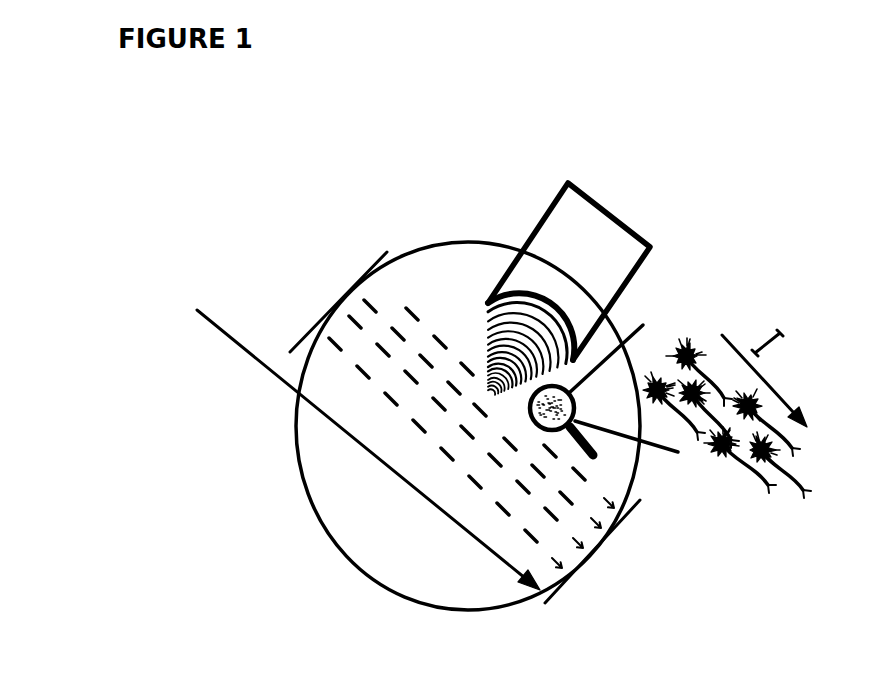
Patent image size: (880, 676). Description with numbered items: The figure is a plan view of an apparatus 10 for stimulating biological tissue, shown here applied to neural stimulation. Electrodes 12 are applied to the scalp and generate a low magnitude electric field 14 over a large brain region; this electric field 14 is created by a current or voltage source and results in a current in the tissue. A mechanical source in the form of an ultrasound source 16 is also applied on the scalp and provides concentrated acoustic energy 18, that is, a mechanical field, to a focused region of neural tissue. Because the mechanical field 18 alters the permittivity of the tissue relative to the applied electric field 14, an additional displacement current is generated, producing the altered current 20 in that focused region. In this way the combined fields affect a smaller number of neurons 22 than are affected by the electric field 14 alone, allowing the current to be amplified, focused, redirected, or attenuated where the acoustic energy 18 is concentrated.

The apparatus 10 is at (115, 292).
The electrodes 12 is at (318, 297).
The electric field 14 is at (391, 280).
The ultrasound source 16 is at (588, 193).
The concentrated acoustic energy 18 is at (492, 328).
The altered current 20 is at (758, 335).
The neurons 22 is at (671, 465).